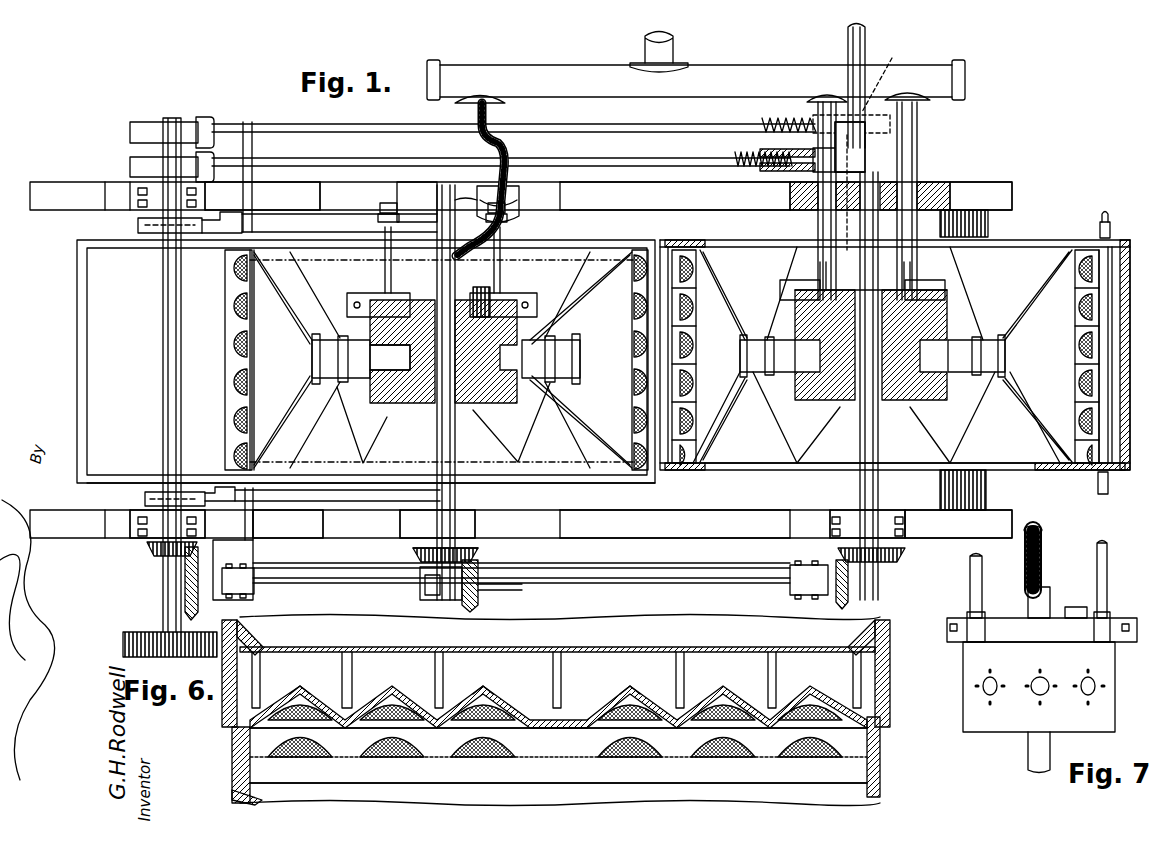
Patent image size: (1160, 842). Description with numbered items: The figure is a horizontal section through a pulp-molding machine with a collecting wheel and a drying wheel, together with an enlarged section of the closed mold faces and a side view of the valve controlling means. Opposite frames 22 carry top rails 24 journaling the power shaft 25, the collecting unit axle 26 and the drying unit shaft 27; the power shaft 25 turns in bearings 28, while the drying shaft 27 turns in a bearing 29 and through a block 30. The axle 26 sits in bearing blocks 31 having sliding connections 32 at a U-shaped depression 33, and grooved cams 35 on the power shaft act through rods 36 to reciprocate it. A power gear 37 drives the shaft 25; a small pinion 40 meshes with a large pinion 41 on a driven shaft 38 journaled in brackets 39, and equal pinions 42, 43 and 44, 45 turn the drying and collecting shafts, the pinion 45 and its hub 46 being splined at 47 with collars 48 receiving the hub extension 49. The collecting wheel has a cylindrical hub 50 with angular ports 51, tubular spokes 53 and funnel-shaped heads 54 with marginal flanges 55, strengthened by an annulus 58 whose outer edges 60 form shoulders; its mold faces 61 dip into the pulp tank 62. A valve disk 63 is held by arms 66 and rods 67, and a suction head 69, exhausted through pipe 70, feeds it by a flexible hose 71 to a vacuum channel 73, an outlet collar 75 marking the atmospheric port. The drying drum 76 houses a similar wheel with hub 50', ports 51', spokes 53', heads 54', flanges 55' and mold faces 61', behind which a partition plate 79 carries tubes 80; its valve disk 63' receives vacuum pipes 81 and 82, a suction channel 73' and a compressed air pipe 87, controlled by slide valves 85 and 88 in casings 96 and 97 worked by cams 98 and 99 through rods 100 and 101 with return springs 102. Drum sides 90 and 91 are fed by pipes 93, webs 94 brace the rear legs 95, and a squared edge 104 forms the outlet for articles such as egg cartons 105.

In FIG. 1, the frames 22 is at (521, 360).
In FIG. 1, the top rails 24 is at (675, 360).
In FIG. 1, the power shaft 25 is at (163, 368).
In FIG. 1, the collecting unit axle 26 is at (457, 491).
In FIG. 7, the collecting unit axle 26 is at (1028, 605).
In FIG. 1, the drying unit shaft 27 is at (860, 491).
In FIG. 1, the bearings 28 is at (205, 524).
In FIG. 1, the bearing 29 is at (832, 524).
In FIG. 1, the block 30 is at (884, 182).
In FIG. 1, the bearing blocks 31 is at (443, 195).
In FIG. 1, the sliding connections 32 is at (520, 197).
In FIG. 1, the U-shaped depression 33 is at (325, 193).
In FIG. 1, the grooved cams 35 is at (138, 226).
In FIG. 1, the rods 36 is at (263, 232).
In FIG. 1, the power gear 37 is at (178, 645).
In FIG. 1, the driven shaft 38 is at (636, 565).
In FIG. 1, the brackets 39 is at (233, 570).
In FIG. 1, the small pinion 40 is at (155, 552).
In FIG. 1, the large pinion 41 is at (185, 600).
In FIG. 1, the pinion 42 is at (905, 555).
In FIG. 1, the pinion 43 is at (850, 586).
In FIG. 1, the pinion 44 is at (445, 552).
In FIG. 1, the pinion 45 is at (480, 558).
In FIG. 1, the hub 46 is at (420, 590).
In FIG. 1, the spline 47 is at (490, 592).
In FIG. 1, the collars 48 is at (450, 600).
In FIG. 1, the hub extension 49 is at (400, 571).
In FIG. 1, the cylindrical hub 50 is at (443, 368).
In FIG. 7, the cylindrical hub 50 is at (1039, 687).
In FIG. 1, the angular ports 51 is at (390, 357).
In FIG. 7, the angular ports 51 is at (1040, 677).
In FIG. 1, the tubular spokes 53 is at (446, 359).
In FIG. 1, the heads 54 is at (443, 360).
In FIG. 6, the heads 54 is at (560, 753).
In FIG. 1, the marginal flanges 55 is at (218, 362).
In FIG. 6, the marginal flanges 55 is at (523, 750).
In FIG. 1, the annulus 58 is at (232, 253).
In FIG. 6, the annulus 58 is at (232, 778).
In FIG. 1, the outer edges 60 is at (235, 266).
In FIG. 1, the mold faces 61 is at (419, 360).
In FIG. 6, the mold faces 61 is at (558, 771).
In FIG. 1, the pulp tank 62 is at (366, 361).
In FIG. 1, the valve disk 63 is at (428, 298).
In FIG. 7, the valve disk 63 is at (1042, 630).
In FIG. 1, the arms 66 is at (440, 207).
In FIG. 1, the rods 67 is at (378, 222).
In FIG. 7, the rods 67 is at (970, 591).
In FIG. 1, the suction head 69 is at (696, 81).
In FIG. 1, the connecting pipe 70 is at (642, 50).
In FIG. 1, the flexible hose 71 is at (512, 146).
In FIG. 7, the flexible hose 71 is at (1043, 562).
In FIG. 1, the vacuum channel 73 is at (400, 260).
In FIG. 1, the outlet collar 75 is at (493, 292).
In FIG. 7, the outlet collar 75 is at (1076, 607).
In FIG. 1, the drying drum 76 is at (1108, 360).
In FIG. 1, the partition plate 79 is at (693, 298).
In FIG. 6, the partition plate 79 is at (618, 652).
In FIG. 1, the tubes 80 is at (688, 420).
In FIG. 6, the tubes 80 is at (433, 665).
In FIG. 1, the vacuum pipe 81 is at (818, 227).
In FIG. 1, the vacuum pipe 82 is at (981, 196).
In FIG. 1, the slide valve 85 is at (825, 175).
In FIG. 1, the compressed air pipe 87 is at (848, 46).
In FIG. 1, the slide valve 88 is at (880, 143).
In FIG. 1, the drum side 90 is at (900, 470).
In FIG. 6, the drum side 90 is at (890, 677).
In FIG. 1, the drum side 91 is at (1010, 240).
In FIG. 6, the drum side 91 is at (222, 714).
In FIG. 1, the pipes 93 is at (1098, 221).
In FIG. 1, the strengthening webs 94 is at (988, 218).
In FIG. 1, the rear legs 95 is at (958, 524).
In FIG. 1, the casing 96 is at (790, 165).
In FIG. 1, the casing 97 is at (776, 156).
In FIG. 1, the cam member 98 is at (130, 167).
In FIG. 1, the cam member 99 is at (130, 134).
In FIG. 1, the cam rod 100 is at (349, 162).
In FIG. 1, the cam rod 101 is at (399, 128).
In FIG. 1, the return springs 102 is at (764, 126).
In FIG. 1, the squared edge 104 is at (668, 478).
In FIG. 6, the egg cartons 105 is at (505, 690).
In FIG. 1, the hub 50' is at (871, 369).
In FIG. 1, the angular ports 51' is at (871, 345).
In FIG. 1, the spokes 53' is at (872, 356).
In FIG. 1, the heads 54' is at (882, 355).
In FIG. 6, the heads 54' is at (558, 675).
In FIG. 1, the marginal flanges 55' is at (1093, 356).
In FIG. 1, the mold faces 61' is at (886, 360).
In FIG. 6, the mold faces 61' is at (511, 675).
In FIG. 1, the valve disk 63' is at (845, 290).
In FIG. 1, the suction channel 73' is at (864, 272).